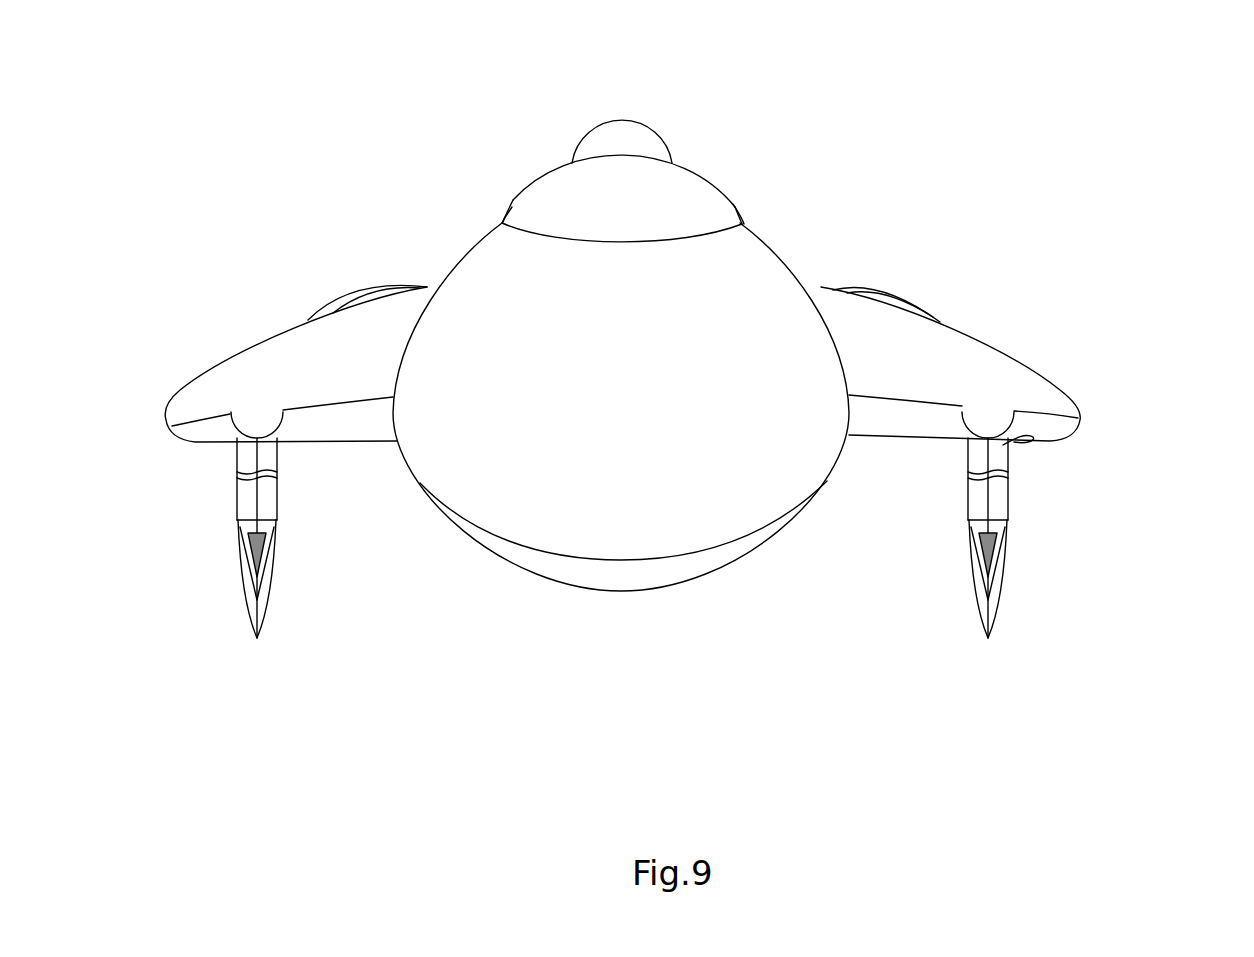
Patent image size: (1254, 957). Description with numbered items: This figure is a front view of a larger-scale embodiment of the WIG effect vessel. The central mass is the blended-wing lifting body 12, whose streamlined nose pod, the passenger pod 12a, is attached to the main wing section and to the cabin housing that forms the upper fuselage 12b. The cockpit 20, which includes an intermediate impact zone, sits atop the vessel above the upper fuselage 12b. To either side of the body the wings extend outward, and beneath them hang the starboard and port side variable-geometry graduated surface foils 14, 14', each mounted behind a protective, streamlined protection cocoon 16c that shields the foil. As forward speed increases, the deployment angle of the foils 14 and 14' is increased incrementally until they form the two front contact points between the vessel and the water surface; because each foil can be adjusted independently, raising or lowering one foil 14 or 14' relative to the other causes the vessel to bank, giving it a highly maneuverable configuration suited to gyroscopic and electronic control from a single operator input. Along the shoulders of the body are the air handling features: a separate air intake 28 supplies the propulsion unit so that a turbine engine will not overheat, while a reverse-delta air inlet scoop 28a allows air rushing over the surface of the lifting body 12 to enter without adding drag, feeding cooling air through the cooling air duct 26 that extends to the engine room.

The blended-wing lifting body 12 is at (332, 380).
The passenger pod 12a is at (663, 392).
The upper fuselage 12b is at (688, 222).
The starboard side variable-geometry graduated surface foil 14 is at (346, 525).
The port side variable-geometry graduated surface foil 14' is at (1086, 525).
The protection cocoon 16c is at (1003, 445).
The cockpit with intermediate impact zone 20 is at (620, 145).
The cooling air duct 26 is at (885, 289).
The air intake for the propulsion unit 28 is at (735, 210).
The air inlet scoop 28a is at (920, 320).